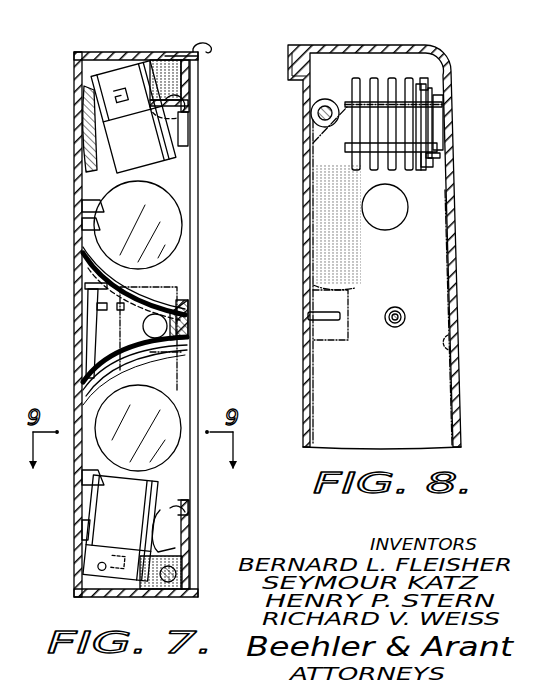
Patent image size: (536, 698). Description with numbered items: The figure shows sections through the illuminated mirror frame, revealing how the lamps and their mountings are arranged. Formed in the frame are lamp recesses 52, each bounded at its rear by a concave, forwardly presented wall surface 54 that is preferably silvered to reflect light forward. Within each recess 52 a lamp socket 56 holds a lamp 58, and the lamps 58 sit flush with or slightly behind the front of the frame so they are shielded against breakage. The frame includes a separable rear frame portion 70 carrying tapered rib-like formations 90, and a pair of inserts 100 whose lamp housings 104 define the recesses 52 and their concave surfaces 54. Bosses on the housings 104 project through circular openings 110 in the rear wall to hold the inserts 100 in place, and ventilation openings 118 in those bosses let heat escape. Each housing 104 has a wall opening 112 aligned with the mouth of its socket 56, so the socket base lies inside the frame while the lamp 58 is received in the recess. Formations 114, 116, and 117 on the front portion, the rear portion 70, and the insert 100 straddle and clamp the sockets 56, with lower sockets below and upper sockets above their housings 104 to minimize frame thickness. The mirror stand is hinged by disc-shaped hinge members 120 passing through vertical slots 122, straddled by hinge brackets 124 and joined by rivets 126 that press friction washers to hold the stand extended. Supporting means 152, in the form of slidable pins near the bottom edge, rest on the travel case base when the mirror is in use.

In FIG. 7, the lamp recess 52 is at (135, 298).
In FIG. 7, the concave wall surface 54 is at (150, 302).
In FIG. 7, the lamp socket 56 is at (110, 128).
In FIG. 7, the lamp 58 is at (162, 205).
In FIG. 8, the rear frame portion 70 is at (379, 425).
In FIG. 7, the rib-like formation 90 is at (88, 326).
In FIG. 8, the rib-like formation 90 is at (310, 343).
In FIG. 7, the insert 100 is at (88, 382).
In FIG. 7, the lamp housing 104 is at (93, 274).
In FIG. 8, the circular opening 110 is at (393, 222).
In FIG. 7, the wall opening 112 is at (82, 207).
In FIG. 7, the formation 114 is at (163, 101).
In FIG. 7, the formation 116 is at (95, 492).
In FIG. 8, the formation 116 is at (350, 103).
In FIG. 7, the formation 117 is at (175, 512).
In FIG. 7, the ventilation opening 118 is at (80, 225).
In FIG. 8, the hinge member 120 is at (440, 165).
In FIG. 8, the vertical slot 122 is at (392, 78).
In FIG. 8, the hinge bracket 124 is at (432, 89).
In FIG. 8, the rivet 126 is at (440, 125).
In FIG. 7, the supporting means 152 is at (163, 584).